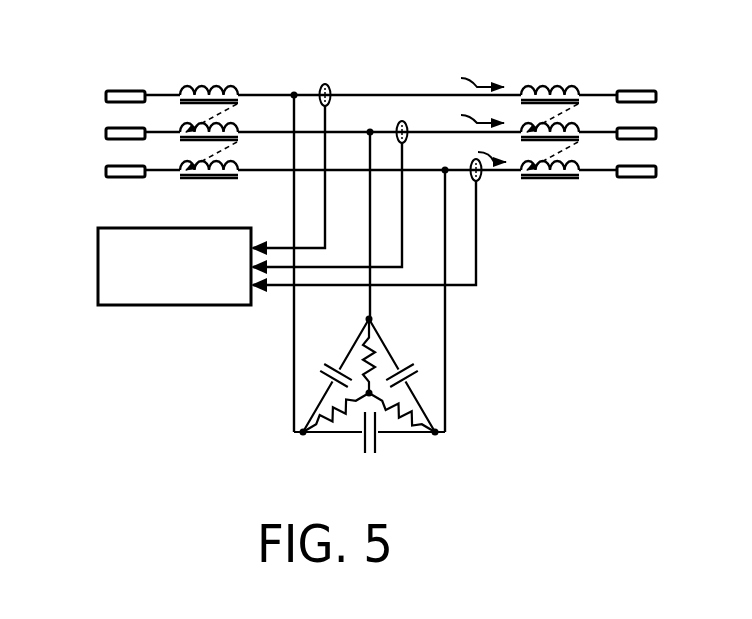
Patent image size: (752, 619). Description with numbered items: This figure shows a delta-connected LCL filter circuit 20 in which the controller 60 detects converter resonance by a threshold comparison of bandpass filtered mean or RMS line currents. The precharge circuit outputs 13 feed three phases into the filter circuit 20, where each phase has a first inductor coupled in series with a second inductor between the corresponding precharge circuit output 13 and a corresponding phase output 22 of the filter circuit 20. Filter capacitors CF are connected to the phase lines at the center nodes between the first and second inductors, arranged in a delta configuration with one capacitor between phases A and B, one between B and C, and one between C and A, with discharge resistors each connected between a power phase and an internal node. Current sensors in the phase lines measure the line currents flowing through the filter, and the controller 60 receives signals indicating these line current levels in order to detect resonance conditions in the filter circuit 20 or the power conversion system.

The LCL filter circuit 20 is at (121, 56).
The precharge circuit outputs 13 is at (90, 122).
The phase output of the filter circuit 22 is at (674, 131).
The controller 60 is at (98, 265).